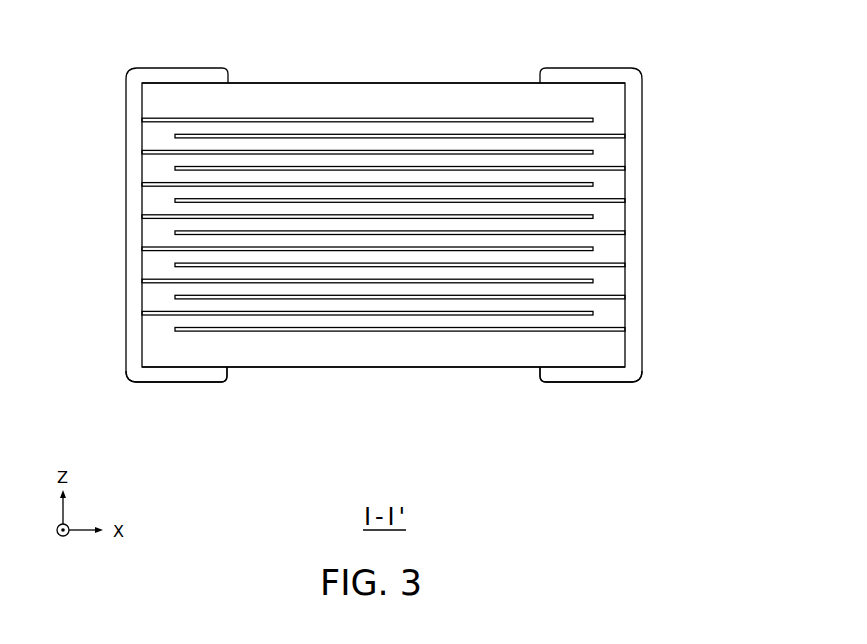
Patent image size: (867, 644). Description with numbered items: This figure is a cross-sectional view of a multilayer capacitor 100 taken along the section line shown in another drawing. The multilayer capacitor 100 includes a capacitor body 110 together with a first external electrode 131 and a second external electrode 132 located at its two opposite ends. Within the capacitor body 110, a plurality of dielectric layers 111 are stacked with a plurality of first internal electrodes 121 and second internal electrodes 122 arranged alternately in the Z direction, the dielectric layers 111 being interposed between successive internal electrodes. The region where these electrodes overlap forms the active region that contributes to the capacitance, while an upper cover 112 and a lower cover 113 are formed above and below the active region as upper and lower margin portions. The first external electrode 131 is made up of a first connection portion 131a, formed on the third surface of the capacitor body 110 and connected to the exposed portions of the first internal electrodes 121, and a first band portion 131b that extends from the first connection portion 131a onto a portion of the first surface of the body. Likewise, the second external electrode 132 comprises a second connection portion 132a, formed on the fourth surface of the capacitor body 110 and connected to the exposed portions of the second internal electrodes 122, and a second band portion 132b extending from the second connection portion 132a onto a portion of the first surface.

The multilayer capacitor 100 is at (625, 56).
The capacitor body 110 is at (405, 83).
The dielectric layer 111 is at (430, 303).
The upper cover 112 is at (495, 103).
The lower cover 113 is at (492, 348).
The first internal electrode 121 is at (293, 282).
The second internal electrode 122 is at (355, 297).
The first external electrode 131 is at (182, 432).
The first connection portion 131a is at (126, 305).
The first band portion 131b is at (168, 373).
The second external electrode 132 is at (667, 432).
The second connection portion 132a is at (641, 305).
The second band portion 132b is at (600, 375).